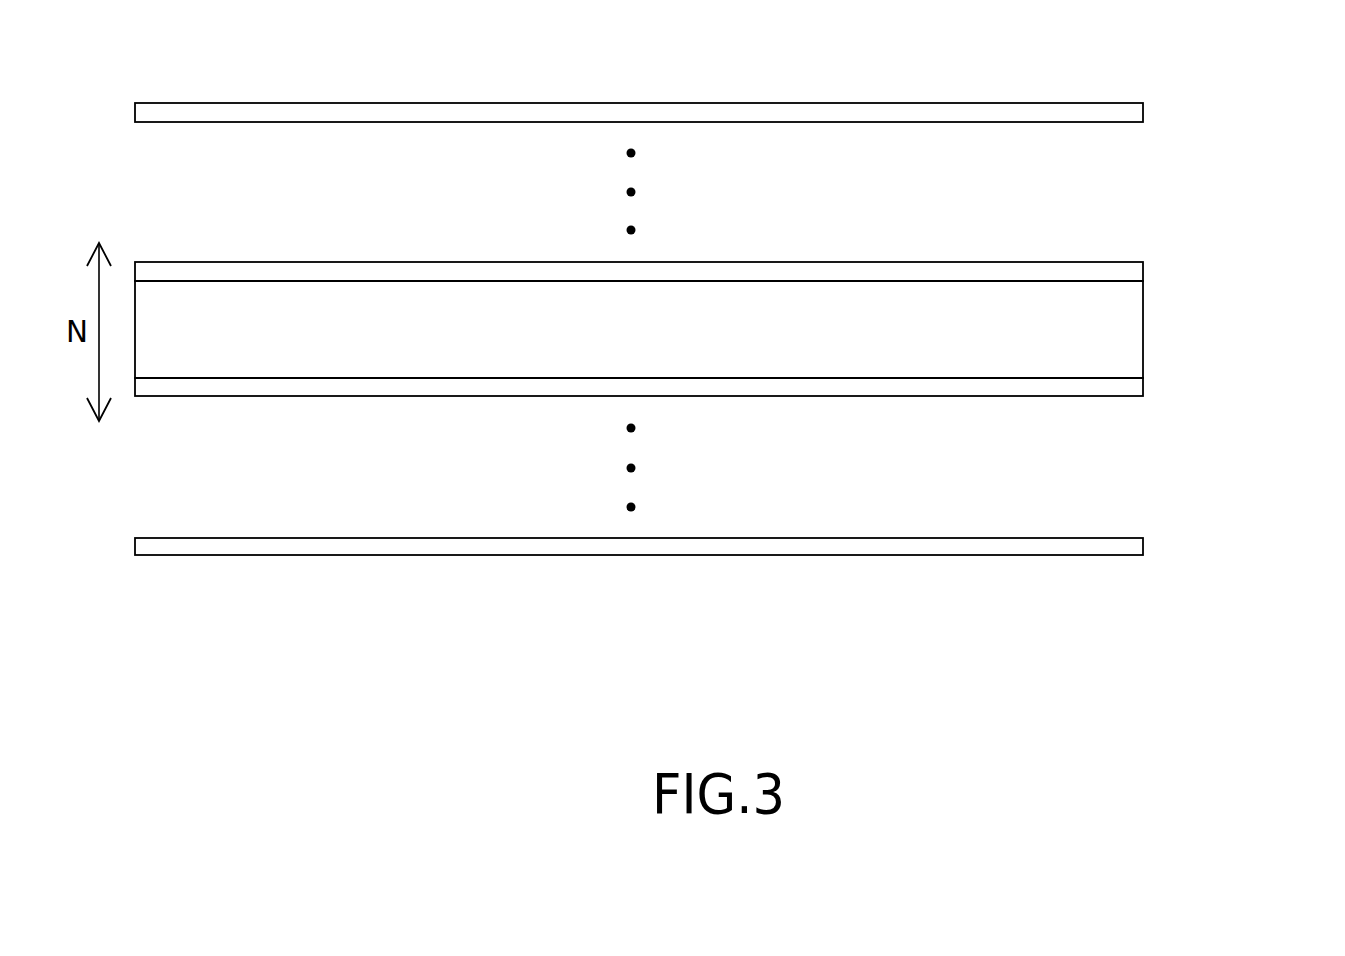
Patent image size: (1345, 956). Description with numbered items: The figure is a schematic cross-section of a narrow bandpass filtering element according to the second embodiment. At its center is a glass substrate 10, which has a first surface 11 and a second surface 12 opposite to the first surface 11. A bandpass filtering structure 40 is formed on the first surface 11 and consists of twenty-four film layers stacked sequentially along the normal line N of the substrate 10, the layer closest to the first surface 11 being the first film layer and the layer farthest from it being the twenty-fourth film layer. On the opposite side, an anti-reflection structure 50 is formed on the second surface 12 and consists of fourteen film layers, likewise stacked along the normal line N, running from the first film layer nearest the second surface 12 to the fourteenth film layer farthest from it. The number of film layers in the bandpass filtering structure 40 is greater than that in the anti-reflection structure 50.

The substrate 10 is at (1225, 283).
The first surface 11 is at (1112, 282).
The second surface 12 is at (1120, 377).
The bandpass filtering structure 40 is at (1272, 55).
The anti-reflection structure 50 is at (1272, 383).